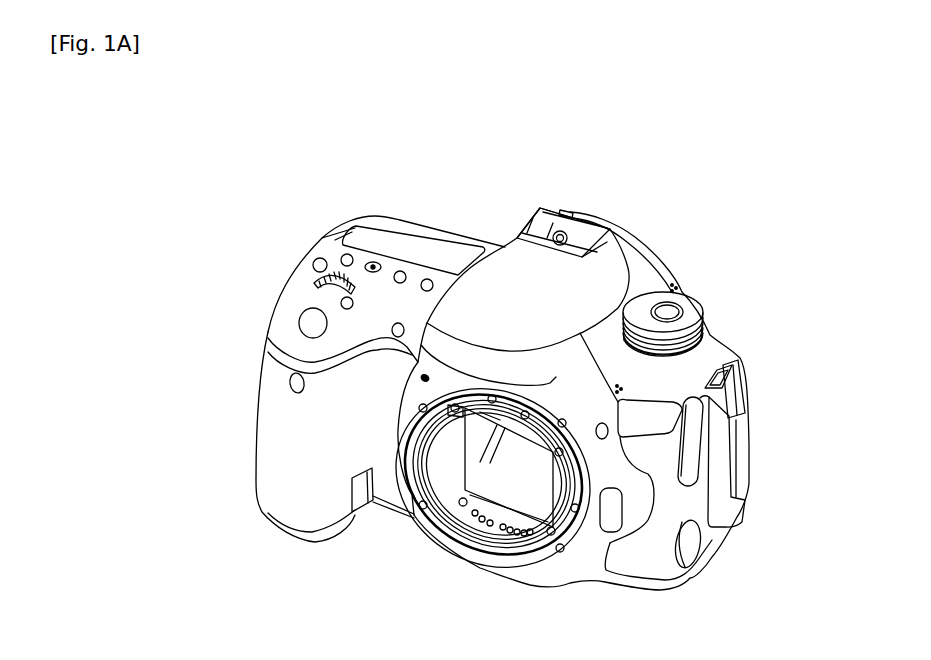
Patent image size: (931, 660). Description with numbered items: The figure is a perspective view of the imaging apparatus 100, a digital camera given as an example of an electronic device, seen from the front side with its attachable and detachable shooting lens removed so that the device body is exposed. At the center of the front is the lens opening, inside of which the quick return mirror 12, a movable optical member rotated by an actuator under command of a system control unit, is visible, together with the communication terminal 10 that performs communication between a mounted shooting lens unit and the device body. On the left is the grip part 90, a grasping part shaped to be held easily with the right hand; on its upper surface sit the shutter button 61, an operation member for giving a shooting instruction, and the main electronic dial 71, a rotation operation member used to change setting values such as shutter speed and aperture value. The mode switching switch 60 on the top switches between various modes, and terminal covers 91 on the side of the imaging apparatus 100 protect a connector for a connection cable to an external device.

The imaging apparatus 100 is at (665, 187).
The communication terminal 10 is at (517, 460).
The quick return mirror 12 is at (465, 522).
The mode switching switch 60 is at (691, 314).
The shutter button 61 is at (308, 323).
The main electronic dial 71 is at (322, 279).
The grip part 90 is at (295, 437).
The terminal covers 91 is at (690, 547).